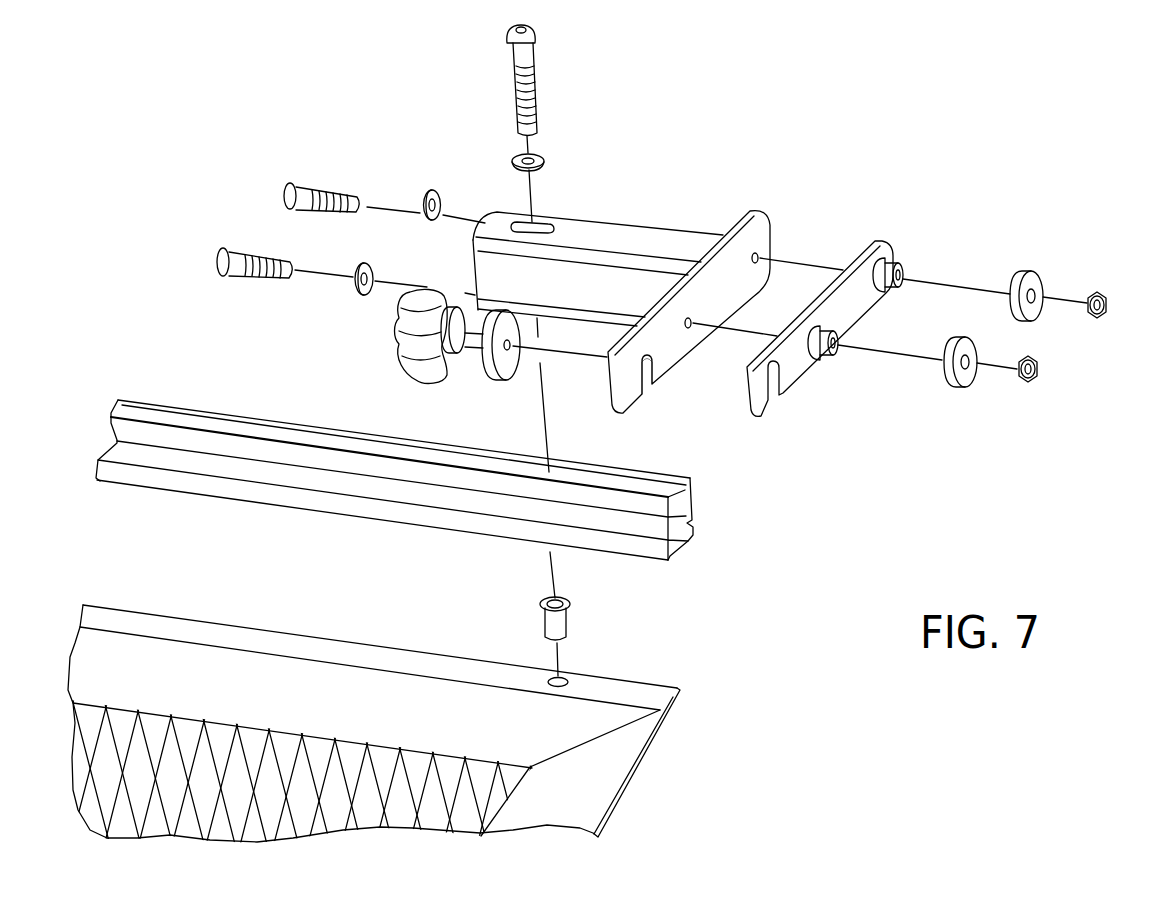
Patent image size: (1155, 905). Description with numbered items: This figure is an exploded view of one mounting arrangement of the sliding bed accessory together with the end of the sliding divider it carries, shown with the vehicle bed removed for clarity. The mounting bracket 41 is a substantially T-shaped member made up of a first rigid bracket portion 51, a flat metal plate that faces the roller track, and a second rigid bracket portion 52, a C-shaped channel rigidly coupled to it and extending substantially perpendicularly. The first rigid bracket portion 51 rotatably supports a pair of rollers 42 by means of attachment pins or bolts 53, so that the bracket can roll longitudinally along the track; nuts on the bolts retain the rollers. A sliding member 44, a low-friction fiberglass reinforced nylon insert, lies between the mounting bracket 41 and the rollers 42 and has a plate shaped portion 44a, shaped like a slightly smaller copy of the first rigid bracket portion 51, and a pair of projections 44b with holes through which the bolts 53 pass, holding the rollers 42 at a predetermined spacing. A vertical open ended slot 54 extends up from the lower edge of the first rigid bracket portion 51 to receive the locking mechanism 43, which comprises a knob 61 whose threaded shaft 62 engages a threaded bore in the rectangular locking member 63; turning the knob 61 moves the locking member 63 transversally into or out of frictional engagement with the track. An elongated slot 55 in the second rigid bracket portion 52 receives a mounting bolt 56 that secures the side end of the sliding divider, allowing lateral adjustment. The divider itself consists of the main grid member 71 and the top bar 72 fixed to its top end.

The mounting bracket 41 is at (680, 206).
The rollers 42 is at (978, 347).
The locking mechanism 43 is at (390, 361).
The sliding member 44 is at (887, 244).
The plate shaped portion 44a is at (850, 300).
The projections 44b is at (903, 269).
The first rigid bracket portion 51 is at (773, 233).
The second rigid bracket portion 52 is at (637, 226).
The attachment pins or bolts 53 is at (308, 208).
The vertical open ended slot 54 is at (638, 394).
The elongated slot 55 is at (543, 222).
The mounting bolt 56 is at (533, 55).
The knob 61 is at (430, 383).
The threaded shaft 62 is at (472, 351).
The locking member 63 is at (503, 366).
The main grid member 71 is at (627, 680).
The top bar 72 is at (347, 515).